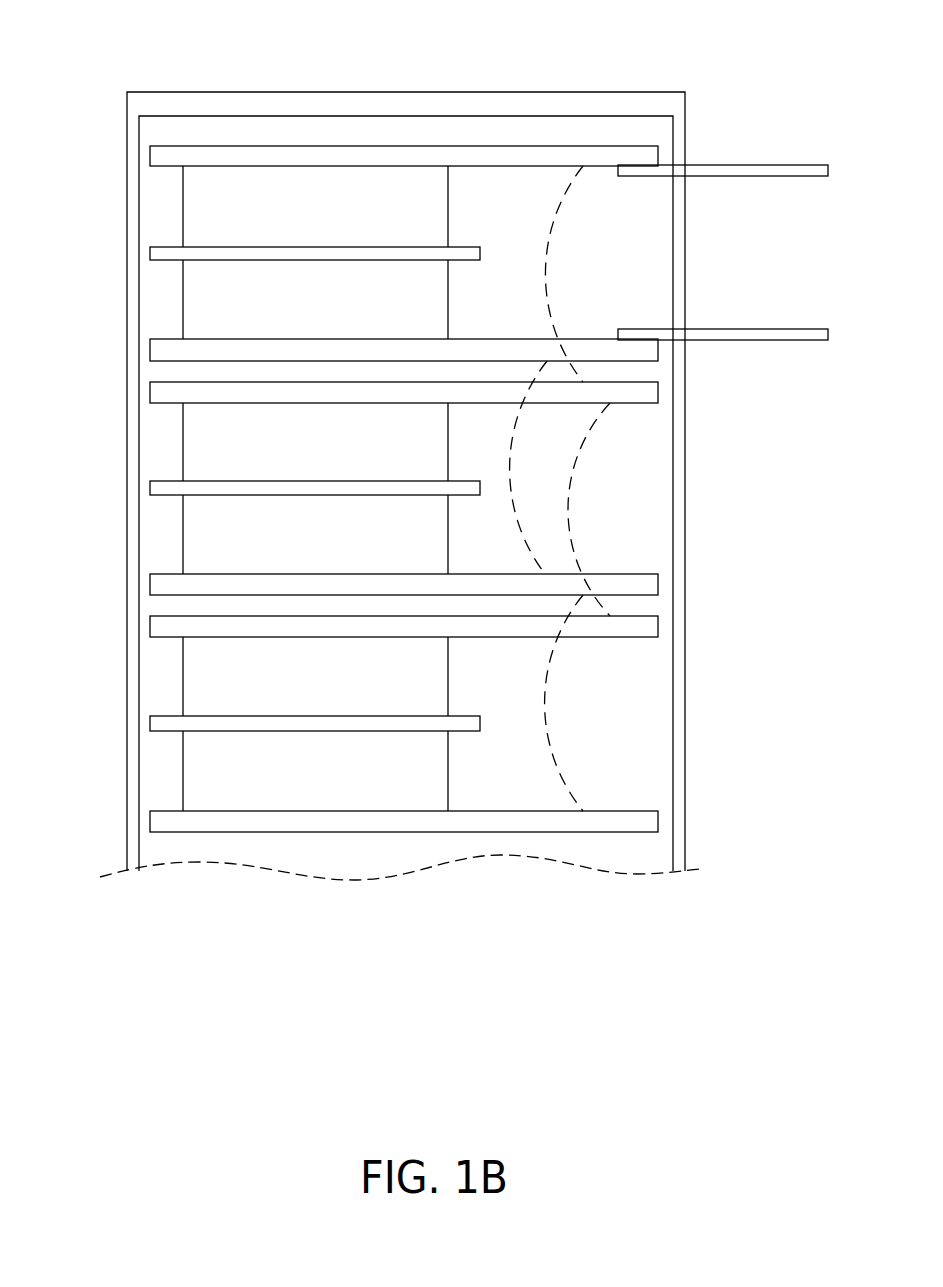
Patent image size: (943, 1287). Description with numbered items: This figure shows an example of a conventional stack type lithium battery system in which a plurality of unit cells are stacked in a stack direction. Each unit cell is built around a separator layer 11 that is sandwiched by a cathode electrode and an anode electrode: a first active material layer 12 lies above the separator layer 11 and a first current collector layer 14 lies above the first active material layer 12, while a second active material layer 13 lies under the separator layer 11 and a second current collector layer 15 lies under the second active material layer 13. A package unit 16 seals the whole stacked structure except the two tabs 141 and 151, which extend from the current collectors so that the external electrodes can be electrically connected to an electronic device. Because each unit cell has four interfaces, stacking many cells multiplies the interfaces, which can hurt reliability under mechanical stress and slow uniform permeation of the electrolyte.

The package unit 16 is at (126, 98).
The first active material layer 12 is at (378, 180).
The first current collector layer 14 is at (533, 146).
The tab 141 is at (752, 165).
The second current collector layer 15 is at (655, 361).
The tab 151 is at (772, 330).
The separator layer 11 is at (160, 253).
The second active material layer 13 is at (190, 302).